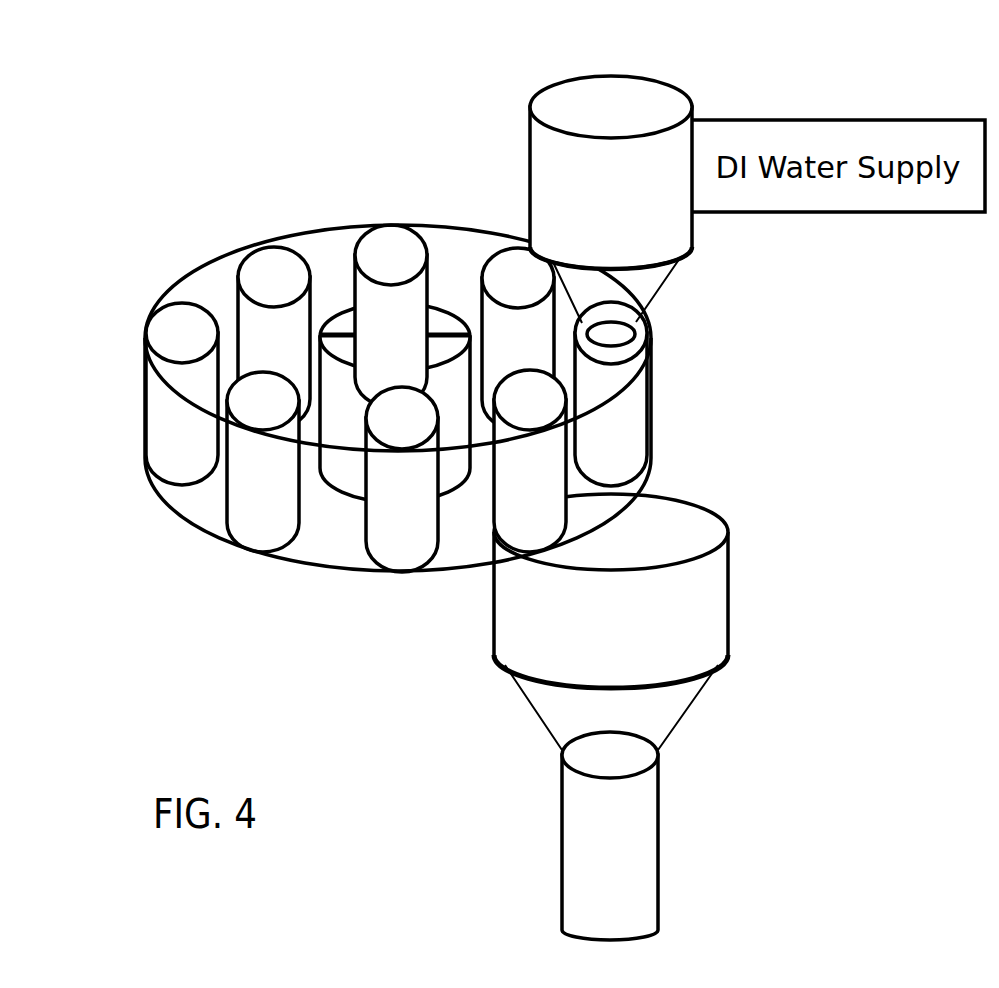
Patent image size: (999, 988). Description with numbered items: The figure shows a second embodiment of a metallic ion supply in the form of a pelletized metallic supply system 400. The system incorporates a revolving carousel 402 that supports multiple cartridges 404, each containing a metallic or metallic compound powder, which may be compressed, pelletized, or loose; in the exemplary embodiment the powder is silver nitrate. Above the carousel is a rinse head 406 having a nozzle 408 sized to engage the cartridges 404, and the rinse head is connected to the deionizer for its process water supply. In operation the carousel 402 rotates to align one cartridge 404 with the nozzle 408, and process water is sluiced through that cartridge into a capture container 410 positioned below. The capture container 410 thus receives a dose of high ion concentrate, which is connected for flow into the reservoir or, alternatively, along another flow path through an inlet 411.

The pelletized metallic supply system 400 is at (424, 345).
The revolving carousel 402 is at (325, 252).
The cartridge 404 is at (633, 407).
The rinse head 406 is at (625, 107).
The nozzle 408 is at (612, 337).
The capture container 410 is at (728, 598).
The inlet 411 is at (658, 843).